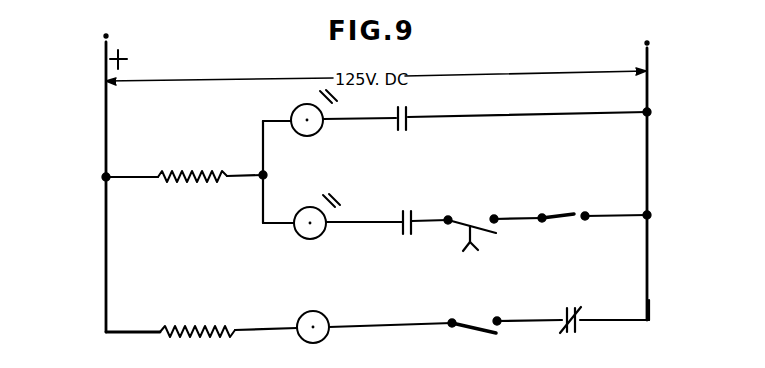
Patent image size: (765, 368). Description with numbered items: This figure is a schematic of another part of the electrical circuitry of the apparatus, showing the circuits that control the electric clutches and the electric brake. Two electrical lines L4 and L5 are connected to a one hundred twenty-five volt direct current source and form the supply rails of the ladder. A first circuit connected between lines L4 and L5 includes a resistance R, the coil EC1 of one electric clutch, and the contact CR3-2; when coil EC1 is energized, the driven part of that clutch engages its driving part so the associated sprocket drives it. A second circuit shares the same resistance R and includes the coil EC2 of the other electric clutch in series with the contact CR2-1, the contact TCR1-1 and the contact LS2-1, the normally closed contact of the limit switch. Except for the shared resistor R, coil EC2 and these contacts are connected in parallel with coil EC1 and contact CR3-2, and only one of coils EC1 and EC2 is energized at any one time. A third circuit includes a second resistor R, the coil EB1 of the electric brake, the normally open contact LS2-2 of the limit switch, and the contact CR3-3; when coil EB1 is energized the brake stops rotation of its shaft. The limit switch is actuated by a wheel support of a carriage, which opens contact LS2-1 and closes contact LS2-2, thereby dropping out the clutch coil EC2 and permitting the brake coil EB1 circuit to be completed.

The electrical line L4 is at (104, 82).
The electrical line L5 is at (647, 58).
The resistance R is at (191, 175).
The coil of electric clutch EC1 is at (321, 131).
The coil of electric clutch EC2 is at (324, 234).
The coil of electric brake EB1 is at (327, 318).
The contact CR3-2 is at (407, 115).
The contact CR2-1 is at (405, 213).
The contact TCR1-1 is at (453, 214).
The normally closed contact LS2-1 is at (566, 211).
The normally open contact LS2-2 is at (467, 321).
The contact CR3-3 is at (578, 325).